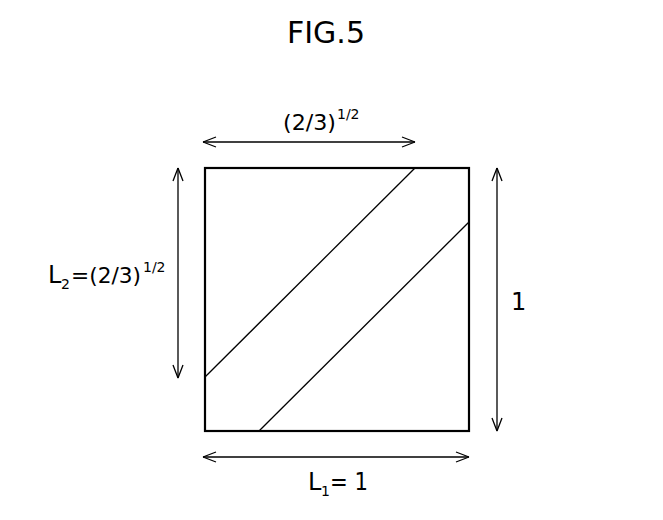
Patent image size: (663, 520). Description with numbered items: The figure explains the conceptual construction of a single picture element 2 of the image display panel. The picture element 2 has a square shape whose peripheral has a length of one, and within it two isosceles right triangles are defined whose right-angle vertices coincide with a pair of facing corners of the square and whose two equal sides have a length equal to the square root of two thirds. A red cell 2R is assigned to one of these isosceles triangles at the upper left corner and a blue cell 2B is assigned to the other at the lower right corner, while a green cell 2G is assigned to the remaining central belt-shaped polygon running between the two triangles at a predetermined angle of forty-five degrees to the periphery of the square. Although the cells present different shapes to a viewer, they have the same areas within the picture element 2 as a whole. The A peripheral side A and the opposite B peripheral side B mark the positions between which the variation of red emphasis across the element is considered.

The picture element 2 is at (456, 141).
The red cell 2R is at (271, 237).
The green cell 2G is at (351, 316).
The blue cell 2B is at (431, 396).
The A peripheral side A is at (205, 404).
The B peripheral side B is at (469, 393).